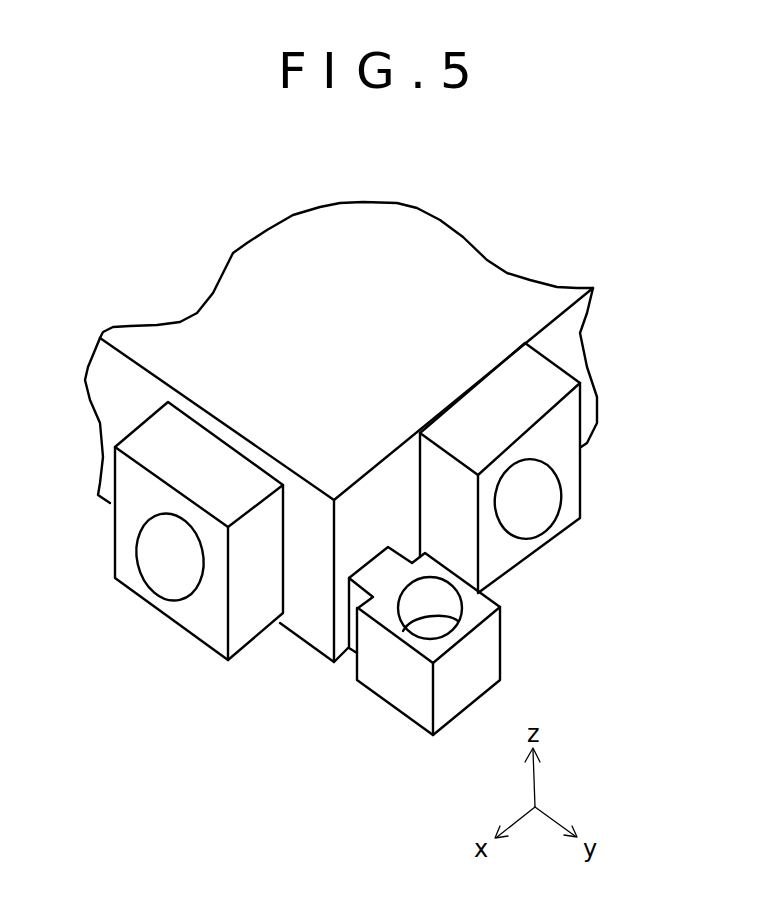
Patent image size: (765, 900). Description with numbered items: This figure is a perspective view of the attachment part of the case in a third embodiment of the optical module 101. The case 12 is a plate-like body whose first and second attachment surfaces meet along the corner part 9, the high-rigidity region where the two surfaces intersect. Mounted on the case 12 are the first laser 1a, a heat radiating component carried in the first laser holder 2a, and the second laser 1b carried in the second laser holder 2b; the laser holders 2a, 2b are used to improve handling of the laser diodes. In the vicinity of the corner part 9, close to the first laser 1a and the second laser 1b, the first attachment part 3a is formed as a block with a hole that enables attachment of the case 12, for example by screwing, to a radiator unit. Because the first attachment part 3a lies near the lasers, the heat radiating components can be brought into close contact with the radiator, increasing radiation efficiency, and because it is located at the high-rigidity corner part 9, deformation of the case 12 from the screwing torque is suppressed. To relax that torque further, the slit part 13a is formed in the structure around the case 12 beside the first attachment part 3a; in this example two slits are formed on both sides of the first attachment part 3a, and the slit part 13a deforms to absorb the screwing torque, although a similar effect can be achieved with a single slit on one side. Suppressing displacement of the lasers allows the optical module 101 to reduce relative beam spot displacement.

The optical module 101 is at (346, 344).
The case 12 is at (563, 347).
The corner part 9 is at (333, 571).
The first laser 1a is at (532, 505).
The first laser holder 2a is at (500, 558).
The second laser 1b is at (213, 620).
The second laser holder 2b is at (163, 563).
The slit part 13a is at (357, 620).
The first attachment part 3a is at (410, 610).